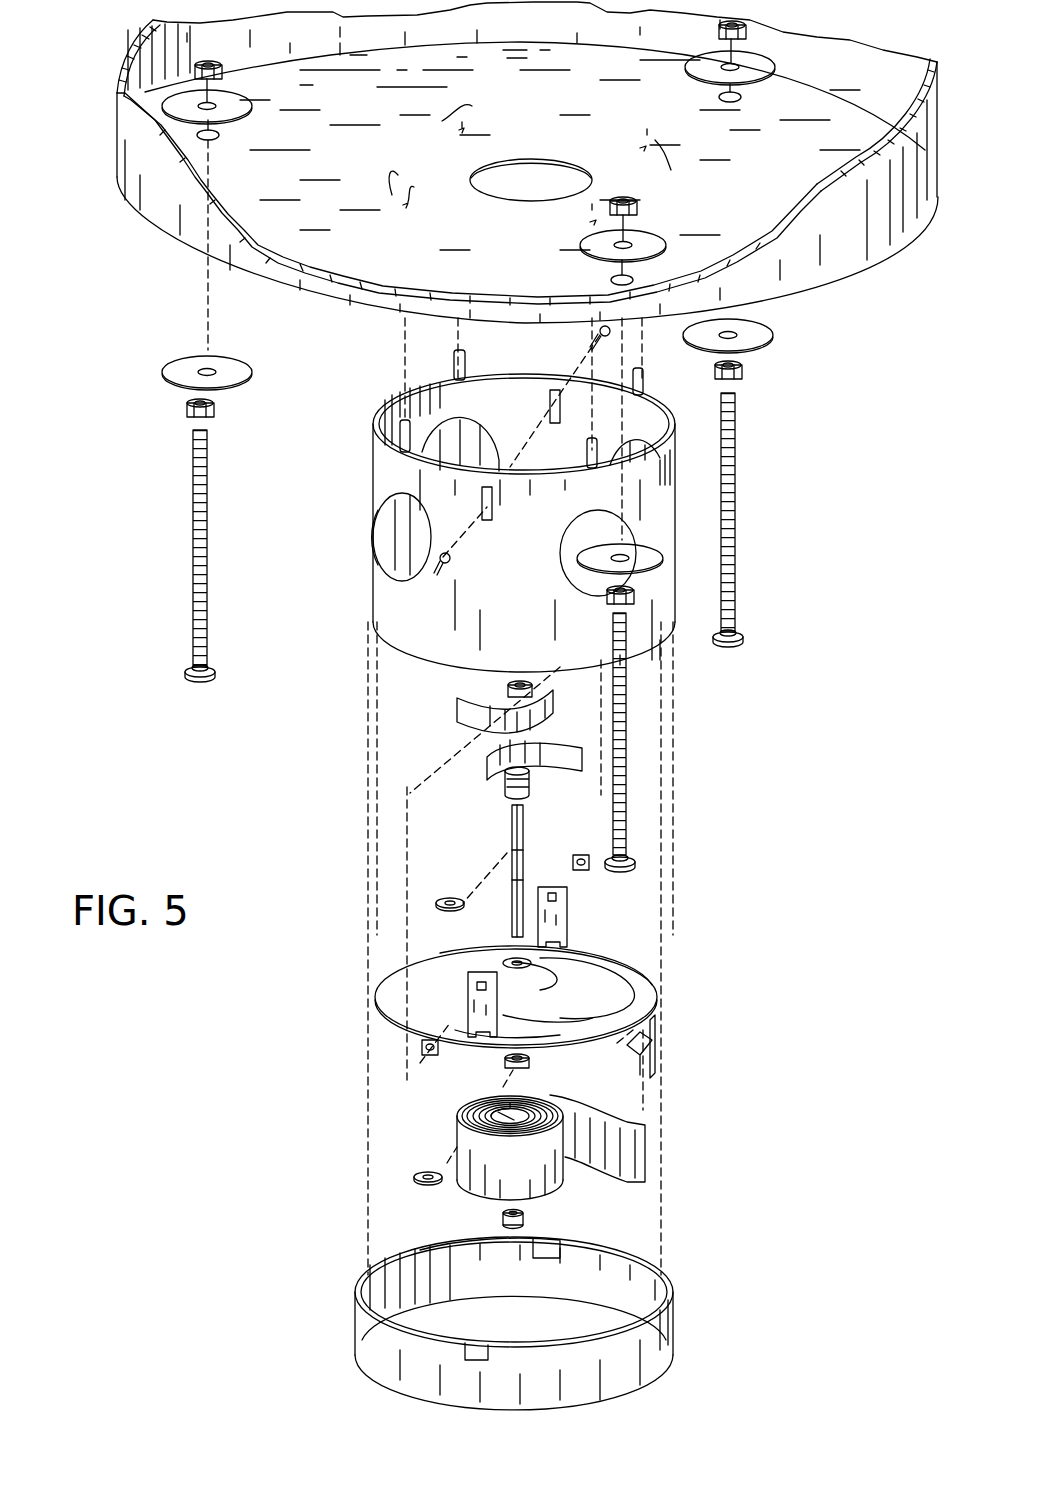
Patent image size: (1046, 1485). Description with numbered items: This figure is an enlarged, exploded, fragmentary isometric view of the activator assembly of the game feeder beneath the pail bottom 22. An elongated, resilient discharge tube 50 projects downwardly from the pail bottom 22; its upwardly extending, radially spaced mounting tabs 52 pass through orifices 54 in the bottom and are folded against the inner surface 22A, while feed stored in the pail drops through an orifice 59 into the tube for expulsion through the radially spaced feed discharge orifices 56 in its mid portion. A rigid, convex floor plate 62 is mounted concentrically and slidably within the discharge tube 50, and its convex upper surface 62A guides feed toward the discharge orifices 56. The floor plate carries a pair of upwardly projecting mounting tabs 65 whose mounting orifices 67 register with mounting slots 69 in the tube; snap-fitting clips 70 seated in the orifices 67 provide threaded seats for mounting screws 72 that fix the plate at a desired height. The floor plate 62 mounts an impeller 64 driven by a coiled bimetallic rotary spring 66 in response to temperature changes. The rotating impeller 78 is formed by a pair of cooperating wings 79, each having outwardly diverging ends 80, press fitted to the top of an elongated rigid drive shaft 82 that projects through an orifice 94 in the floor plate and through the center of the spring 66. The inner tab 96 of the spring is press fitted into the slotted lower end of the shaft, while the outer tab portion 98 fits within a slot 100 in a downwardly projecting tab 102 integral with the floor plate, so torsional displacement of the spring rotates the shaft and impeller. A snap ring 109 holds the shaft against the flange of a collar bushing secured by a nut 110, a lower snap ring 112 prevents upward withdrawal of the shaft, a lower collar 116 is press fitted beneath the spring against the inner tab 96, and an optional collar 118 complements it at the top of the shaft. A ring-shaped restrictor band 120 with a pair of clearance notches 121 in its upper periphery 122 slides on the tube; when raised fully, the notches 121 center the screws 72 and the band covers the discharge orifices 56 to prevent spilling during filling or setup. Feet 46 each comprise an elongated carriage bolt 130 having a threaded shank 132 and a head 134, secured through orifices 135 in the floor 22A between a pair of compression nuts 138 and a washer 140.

The pail bottom 22 is at (886, 263).
The inner surface of pail bottom 22A is at (442, 243).
The feet 46 is at (114, 540).
The discharge tube 50 is at (388, 480).
The mounting tabs 52 is at (466, 360).
The orifices 54 is at (538, 165).
The feed discharge orifices 56 is at (380, 560).
The orifice 59 is at (515, 170).
The floor plate 62 is at (632, 975).
The convex upper surface 62A is at (622, 995).
The impeller assembly 64 is at (360, 715).
The mounting tabs 65 is at (568, 910).
The bimetallic rotary spring 66 is at (668, 1212).
The mounting orifices 67 is at (558, 897).
The mounting slots 69 is at (550, 405).
The snap-fitting clips 70 is at (580, 853).
The mounting screws 72 is at (610, 332).
The rotating impeller 78 is at (445, 708).
The wings 79 is at (569, 721).
The outwardly diverging ends 80 is at (478, 702).
The drive shaft 82 is at (500, 839).
The orifice 94 is at (515, 960).
The inner tab 96 is at (510, 1120).
The outer tab portion 98 is at (640, 1170).
The slot 100 is at (630, 1045).
The downwardly projecting tab 102 is at (658, 1058).
The snap ring 109 is at (450, 898).
The nut 110 is at (503, 1063).
The snap ring 112 is at (422, 1172).
The lower collar 116 is at (525, 1220).
The collar 118 is at (522, 682).
The restrictor band 120 is at (688, 1325).
The clearance notches 121 is at (548, 1250).
The upper periphery 122 is at (452, 1243).
The carriage bolt 130 is at (781, 593).
The threaded shank 132 is at (192, 578).
The head 134 is at (205, 680).
The orifices 135 is at (220, 133).
The compression nuts 138 is at (195, 68).
The washer 140 is at (182, 102).